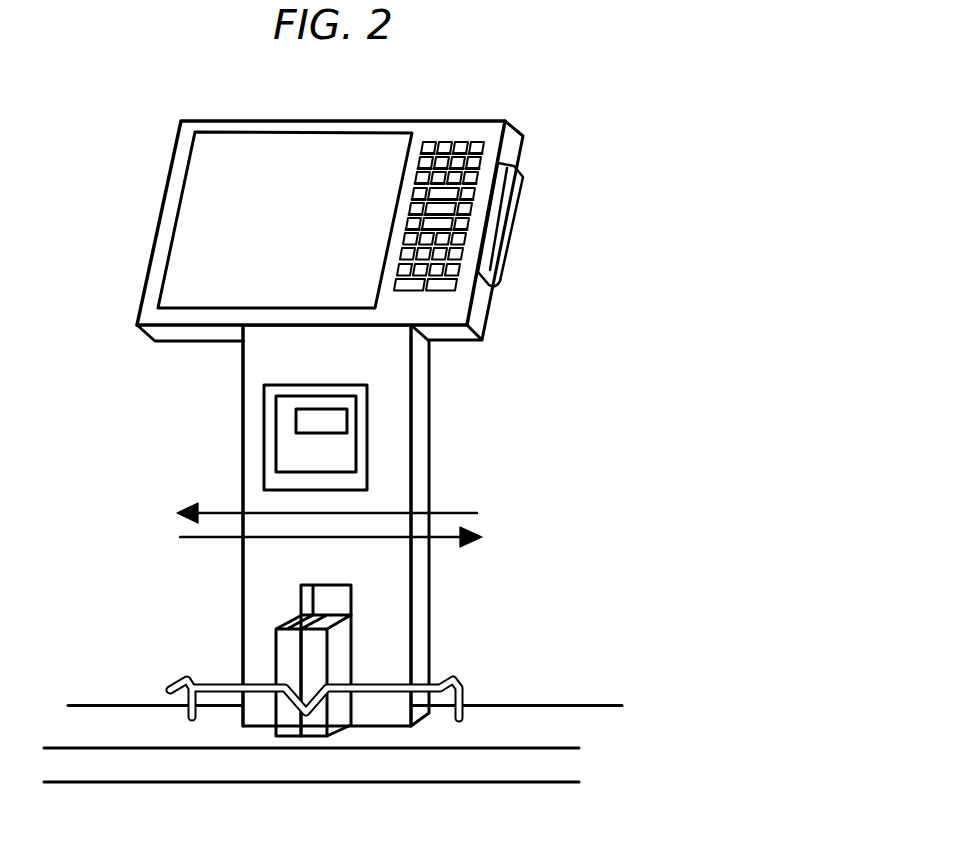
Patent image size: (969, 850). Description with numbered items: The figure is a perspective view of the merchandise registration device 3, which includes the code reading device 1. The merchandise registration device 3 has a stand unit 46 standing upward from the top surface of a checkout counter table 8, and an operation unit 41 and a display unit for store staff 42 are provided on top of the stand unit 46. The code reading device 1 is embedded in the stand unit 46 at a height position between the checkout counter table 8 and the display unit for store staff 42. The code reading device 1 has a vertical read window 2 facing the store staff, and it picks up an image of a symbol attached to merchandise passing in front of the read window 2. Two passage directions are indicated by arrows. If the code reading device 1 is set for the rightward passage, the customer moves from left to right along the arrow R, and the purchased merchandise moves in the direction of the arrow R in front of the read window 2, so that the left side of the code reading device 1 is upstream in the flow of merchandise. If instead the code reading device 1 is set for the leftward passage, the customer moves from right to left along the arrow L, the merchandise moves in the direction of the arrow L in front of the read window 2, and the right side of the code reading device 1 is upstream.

The code reading device 1 is at (293, 453).
The read window 2 is at (300, 422).
The merchandise registration device 3 is at (422, 404).
The checkout counter table 8 is at (545, 722).
The operation unit 41 is at (462, 148).
The display unit for store staff 42 is at (265, 169).
The stand unit 46 is at (396, 444).
The arrow L is at (455, 512).
The arrow R is at (215, 537).